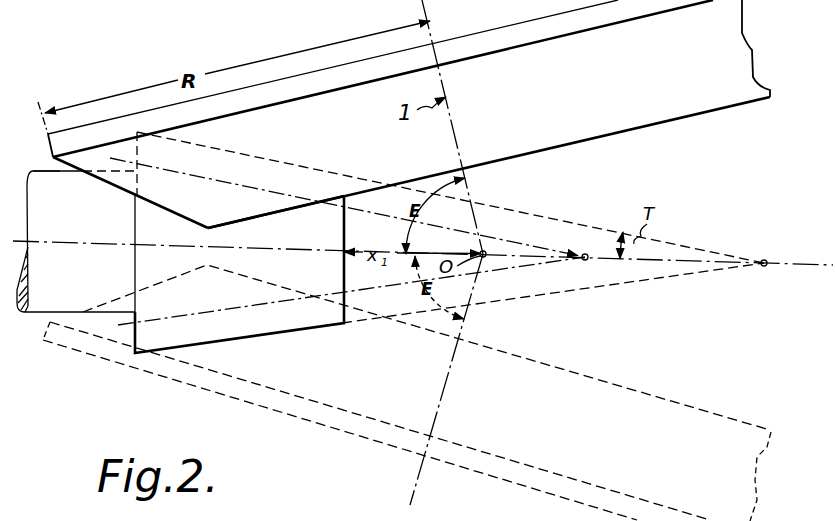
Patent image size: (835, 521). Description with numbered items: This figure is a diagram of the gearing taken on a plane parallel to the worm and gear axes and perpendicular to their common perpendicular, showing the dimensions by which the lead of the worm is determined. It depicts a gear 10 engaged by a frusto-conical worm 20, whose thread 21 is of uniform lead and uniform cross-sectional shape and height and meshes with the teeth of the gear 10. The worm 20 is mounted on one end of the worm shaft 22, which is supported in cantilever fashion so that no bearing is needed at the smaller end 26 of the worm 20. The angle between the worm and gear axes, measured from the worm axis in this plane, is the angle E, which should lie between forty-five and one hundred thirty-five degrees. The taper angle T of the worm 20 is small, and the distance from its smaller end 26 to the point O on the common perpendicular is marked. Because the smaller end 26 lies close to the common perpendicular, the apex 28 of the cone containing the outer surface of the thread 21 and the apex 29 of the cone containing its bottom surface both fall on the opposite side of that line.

The gear 10 is at (283, 100).
The frusto-conical worm 20 is at (173, 255).
The thread 21 is at (95, 240).
The worm shaft 22 is at (50, 186).
The smaller end 26 is at (346, 279).
The apex 28 is at (775, 247).
The apex 29 is at (585, 260).